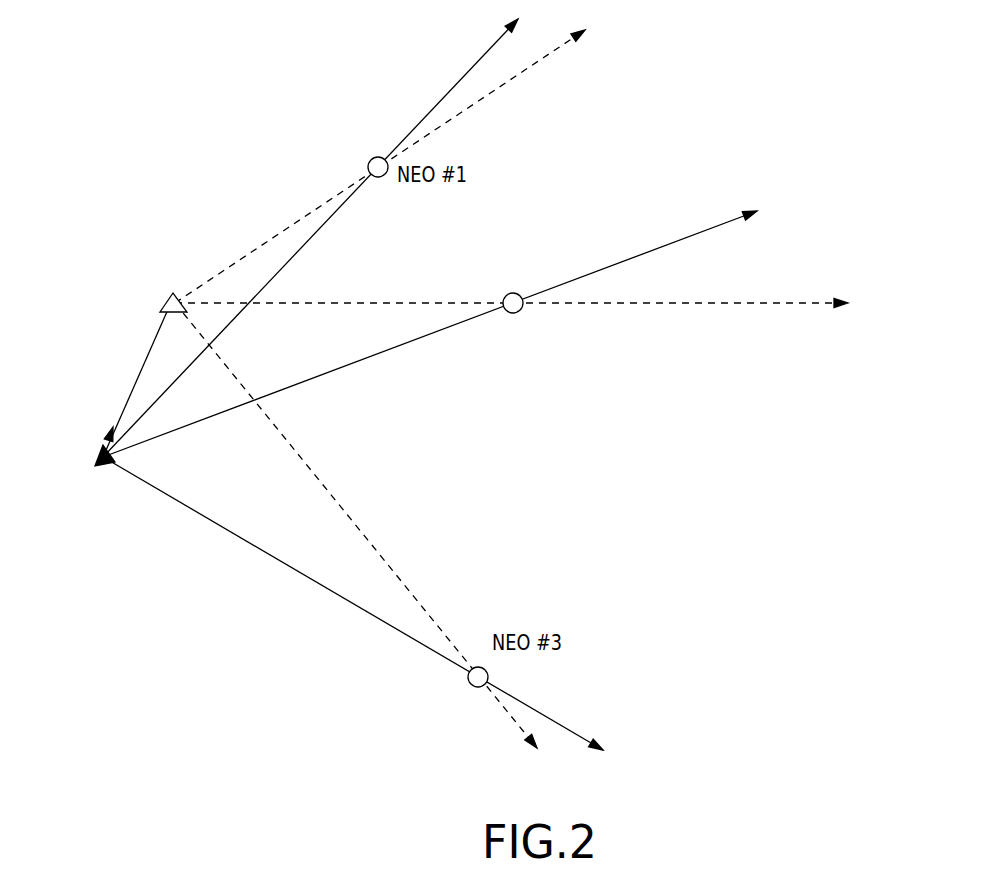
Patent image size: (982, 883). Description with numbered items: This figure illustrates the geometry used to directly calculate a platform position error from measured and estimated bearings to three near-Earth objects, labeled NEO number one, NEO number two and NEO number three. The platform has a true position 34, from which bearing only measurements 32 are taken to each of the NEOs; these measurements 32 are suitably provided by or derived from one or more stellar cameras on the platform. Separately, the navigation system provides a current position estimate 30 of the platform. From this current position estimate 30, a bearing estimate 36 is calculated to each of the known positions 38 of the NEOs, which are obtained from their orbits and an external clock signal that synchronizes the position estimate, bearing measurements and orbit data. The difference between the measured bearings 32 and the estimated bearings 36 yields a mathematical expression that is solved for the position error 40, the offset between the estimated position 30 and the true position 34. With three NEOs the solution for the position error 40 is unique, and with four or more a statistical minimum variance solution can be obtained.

The current position estimate 30 is at (173, 278).
The bearing only measurements 32 is at (656, 238).
The true position 34 is at (98, 480).
The bearing estimate 36 is at (775, 290).
The known positions 38 is at (524, 278).
The position error 40 is at (122, 365).